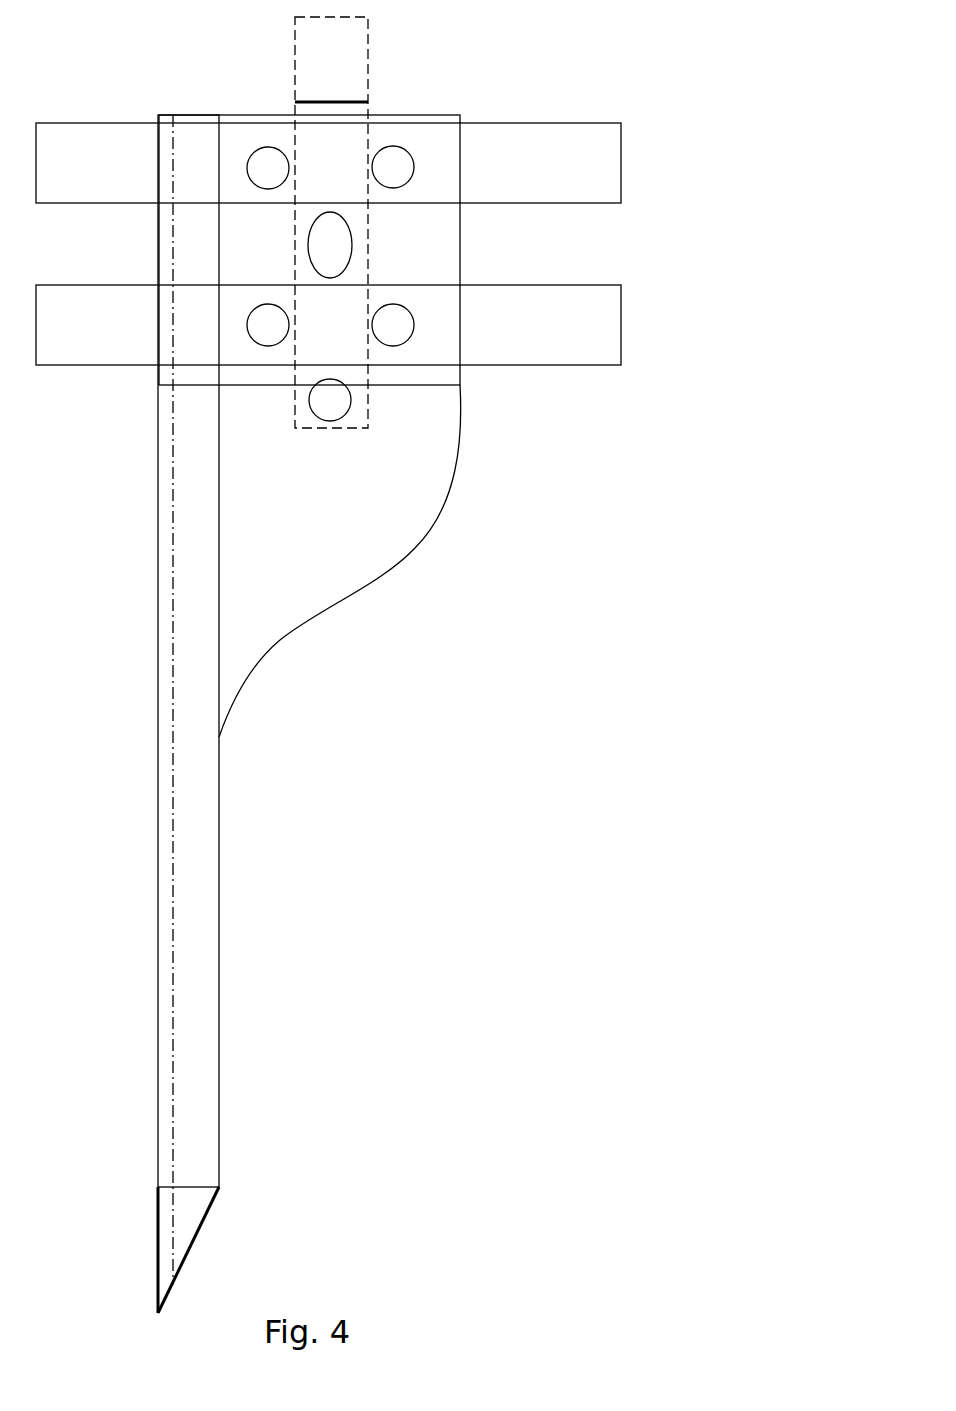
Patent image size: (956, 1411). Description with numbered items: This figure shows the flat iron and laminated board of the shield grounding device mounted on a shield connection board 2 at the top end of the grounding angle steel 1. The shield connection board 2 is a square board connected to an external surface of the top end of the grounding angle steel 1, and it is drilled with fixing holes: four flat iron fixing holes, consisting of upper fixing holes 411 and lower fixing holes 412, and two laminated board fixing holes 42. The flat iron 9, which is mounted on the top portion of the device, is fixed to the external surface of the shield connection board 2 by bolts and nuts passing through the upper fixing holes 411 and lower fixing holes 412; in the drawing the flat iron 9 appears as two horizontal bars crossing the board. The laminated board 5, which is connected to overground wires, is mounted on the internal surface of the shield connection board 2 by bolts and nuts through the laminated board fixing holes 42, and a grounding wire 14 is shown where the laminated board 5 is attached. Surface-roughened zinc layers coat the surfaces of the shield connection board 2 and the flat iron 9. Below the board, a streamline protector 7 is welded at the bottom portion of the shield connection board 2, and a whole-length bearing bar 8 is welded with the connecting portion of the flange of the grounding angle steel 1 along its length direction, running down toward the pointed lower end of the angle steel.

The grounding angle steel 1 is at (202, 840).
The shield connection board 2 is at (435, 375).
The laminated board 5 is at (358, 270).
The streamline protector 7 is at (290, 555).
The whole-length bearing bar 8 is at (162, 928).
The flat iron 9 is at (543, 163).
The grounding wire 14 is at (333, 55).
The laminated board fixing hole 42 is at (328, 243).
The upper fixing hole 411 is at (272, 172).
The lower fixing hole 412 is at (268, 323).